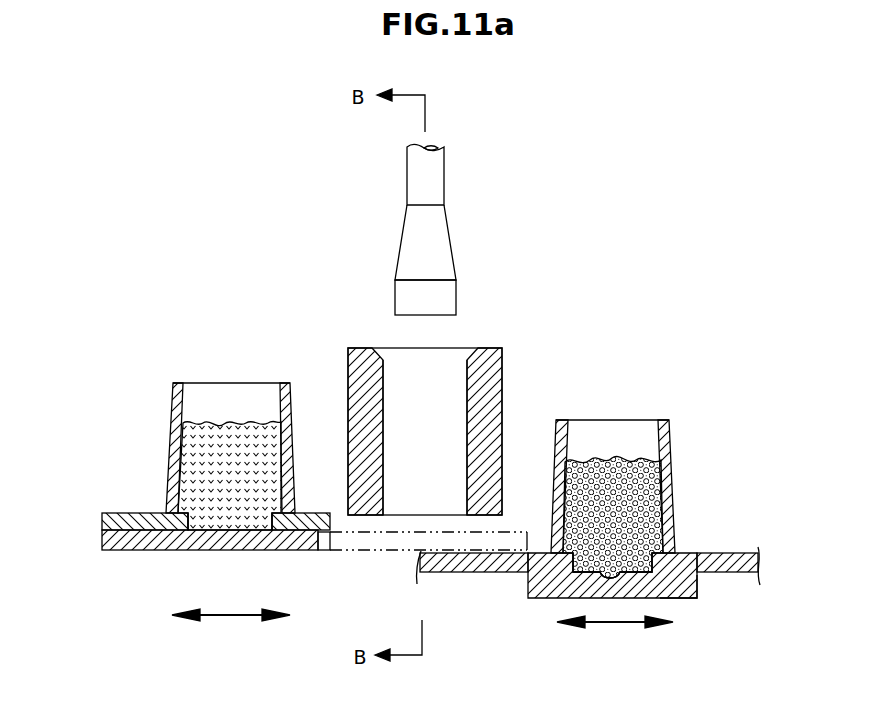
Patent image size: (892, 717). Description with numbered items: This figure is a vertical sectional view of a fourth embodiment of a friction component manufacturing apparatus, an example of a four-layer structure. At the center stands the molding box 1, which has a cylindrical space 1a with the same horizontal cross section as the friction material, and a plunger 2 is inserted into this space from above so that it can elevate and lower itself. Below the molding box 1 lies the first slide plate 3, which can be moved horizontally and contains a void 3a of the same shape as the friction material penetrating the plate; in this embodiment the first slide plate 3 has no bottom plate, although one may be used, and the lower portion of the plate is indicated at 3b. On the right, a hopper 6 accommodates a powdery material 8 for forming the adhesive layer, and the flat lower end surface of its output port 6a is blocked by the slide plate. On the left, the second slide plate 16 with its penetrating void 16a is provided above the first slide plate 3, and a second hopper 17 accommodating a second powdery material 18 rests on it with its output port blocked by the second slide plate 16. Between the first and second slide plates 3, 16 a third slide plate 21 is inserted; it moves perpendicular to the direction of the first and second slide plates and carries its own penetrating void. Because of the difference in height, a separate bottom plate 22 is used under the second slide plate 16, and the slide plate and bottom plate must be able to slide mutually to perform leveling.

The molding box 1 is at (502, 371).
The cylindrical space 1a is at (409, 390).
The plunger 2 is at (440, 250).
The first slide plate 3 is at (727, 553).
The void 3a is at (530, 598).
The lower die block bottom 3b is at (686, 596).
The hopper 6 is at (668, 423).
The output port 6a is at (653, 490).
The powdery material 8 is at (613, 462).
The second slide plate 16 is at (117, 523).
The void 16a is at (207, 520).
The second hopper 17 is at (176, 420).
The second powdery material 18 is at (216, 423).
The third slide plate 21 is at (389, 547).
The bottom plate 22 is at (158, 542).